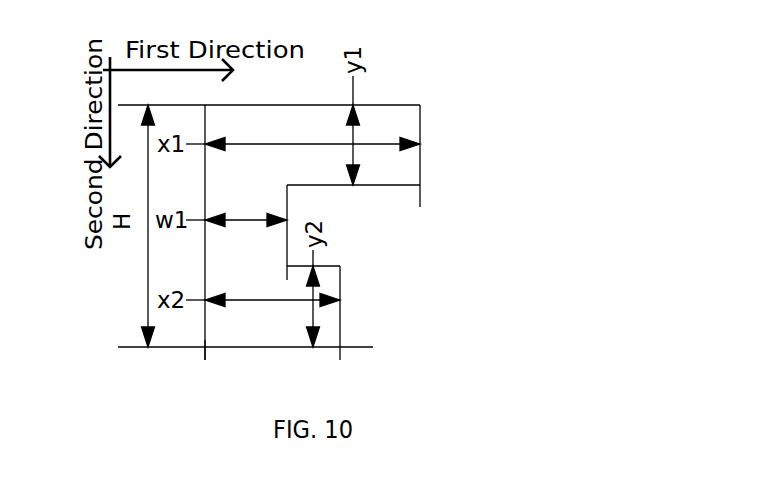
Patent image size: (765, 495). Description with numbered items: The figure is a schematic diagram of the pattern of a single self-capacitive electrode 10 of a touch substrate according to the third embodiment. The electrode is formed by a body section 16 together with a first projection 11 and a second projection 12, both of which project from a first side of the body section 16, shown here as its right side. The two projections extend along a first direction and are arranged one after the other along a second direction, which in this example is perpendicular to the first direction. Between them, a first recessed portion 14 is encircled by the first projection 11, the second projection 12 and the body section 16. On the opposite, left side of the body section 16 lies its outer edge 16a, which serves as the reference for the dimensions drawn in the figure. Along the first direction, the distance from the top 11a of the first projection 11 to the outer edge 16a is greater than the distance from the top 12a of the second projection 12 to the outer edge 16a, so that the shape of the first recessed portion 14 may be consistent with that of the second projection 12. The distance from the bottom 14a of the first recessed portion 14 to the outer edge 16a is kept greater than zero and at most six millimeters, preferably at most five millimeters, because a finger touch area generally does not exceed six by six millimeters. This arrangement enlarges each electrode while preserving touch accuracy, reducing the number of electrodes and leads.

The self-capacitive electrode 10 is at (540, 68).
The first projection 11 is at (408, 170).
The top of the first projection 11a is at (420, 122).
The second projection 12 is at (322, 332).
The top of the second projection 12a is at (340, 290).
The first recessed portion 14 is at (337, 230).
The bottom of the first recessed portion 14a is at (287, 202).
The body section 16 is at (240, 253).
The outer edge 16a is at (205, 325).